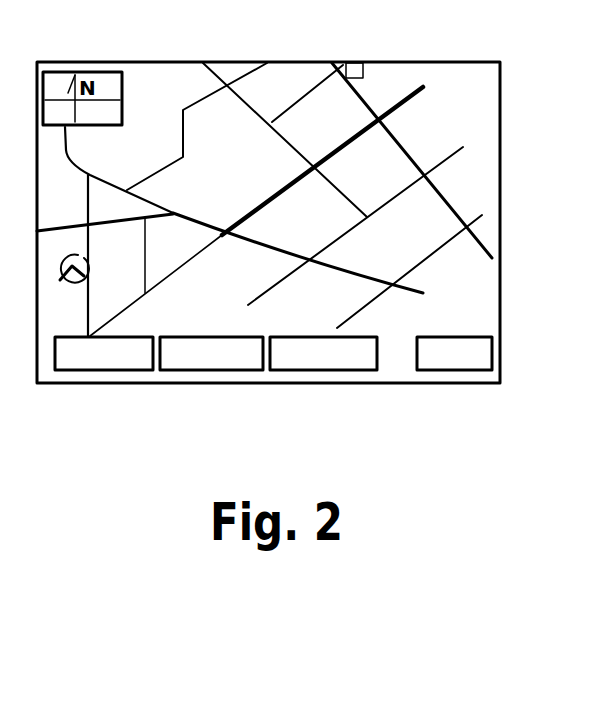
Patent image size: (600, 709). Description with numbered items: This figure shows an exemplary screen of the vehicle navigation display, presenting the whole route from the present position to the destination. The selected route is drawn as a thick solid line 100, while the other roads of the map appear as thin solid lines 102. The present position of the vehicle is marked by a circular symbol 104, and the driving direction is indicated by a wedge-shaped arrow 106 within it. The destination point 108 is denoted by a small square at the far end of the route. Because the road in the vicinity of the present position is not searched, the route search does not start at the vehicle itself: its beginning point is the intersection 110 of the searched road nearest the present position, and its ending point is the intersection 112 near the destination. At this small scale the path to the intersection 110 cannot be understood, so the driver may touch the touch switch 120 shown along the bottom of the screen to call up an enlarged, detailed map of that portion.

The thick solid line 100 is at (253, 208).
The thin solid lines 102 is at (270, 250).
The circular symbol 104 is at (84, 256).
The wedge-shaped arrow 106 is at (86, 274).
The destination point 108 is at (353, 62).
The intersection 110 is at (87, 216).
The intersection 112 is at (330, 75).
The touch switch 120 is at (100, 370).